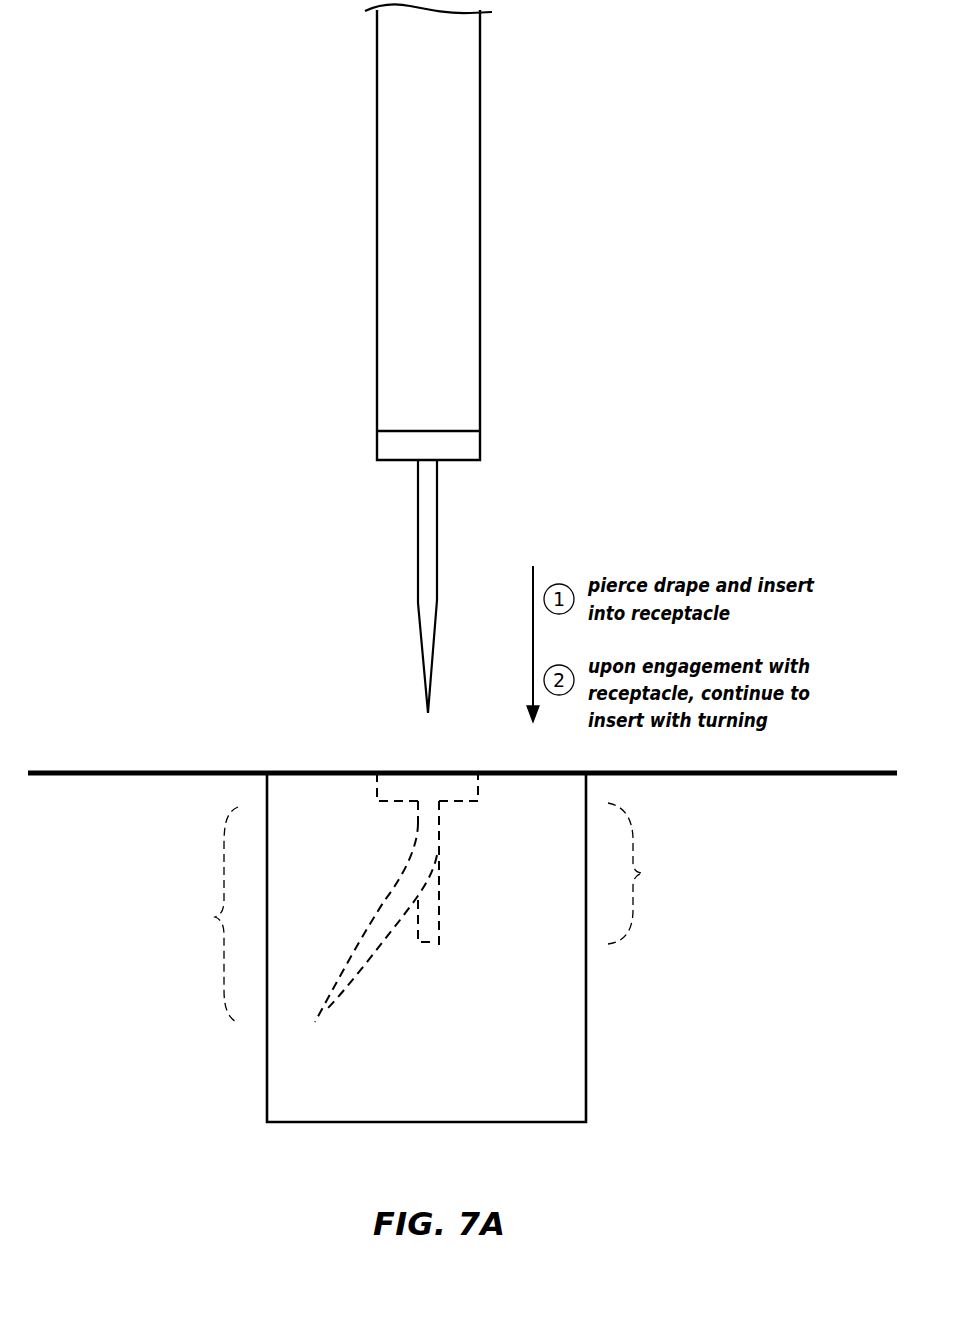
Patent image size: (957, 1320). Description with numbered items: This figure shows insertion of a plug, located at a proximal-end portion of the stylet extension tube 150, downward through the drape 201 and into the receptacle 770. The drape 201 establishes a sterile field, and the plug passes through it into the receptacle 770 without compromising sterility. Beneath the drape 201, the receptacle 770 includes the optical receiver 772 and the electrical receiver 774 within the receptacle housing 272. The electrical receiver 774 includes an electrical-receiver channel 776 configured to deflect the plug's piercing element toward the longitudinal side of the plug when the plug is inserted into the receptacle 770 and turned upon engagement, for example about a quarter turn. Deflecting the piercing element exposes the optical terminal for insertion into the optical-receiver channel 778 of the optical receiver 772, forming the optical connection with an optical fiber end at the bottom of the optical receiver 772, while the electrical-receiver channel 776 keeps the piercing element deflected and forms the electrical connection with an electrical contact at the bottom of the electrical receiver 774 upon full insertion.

The stylet extension tube 150 is at (465, 231).
The drape 201 is at (67, 771).
The receptacle housing 272 is at (586, 1065).
The receptacle 770 is at (723, 915).
The optical receiver 772 is at (428, 945).
The electrical receiver 774 is at (356, 990).
The electrical-receiver channel 776 is at (205, 915).
The optical-receiver channel 778 is at (645, 873).